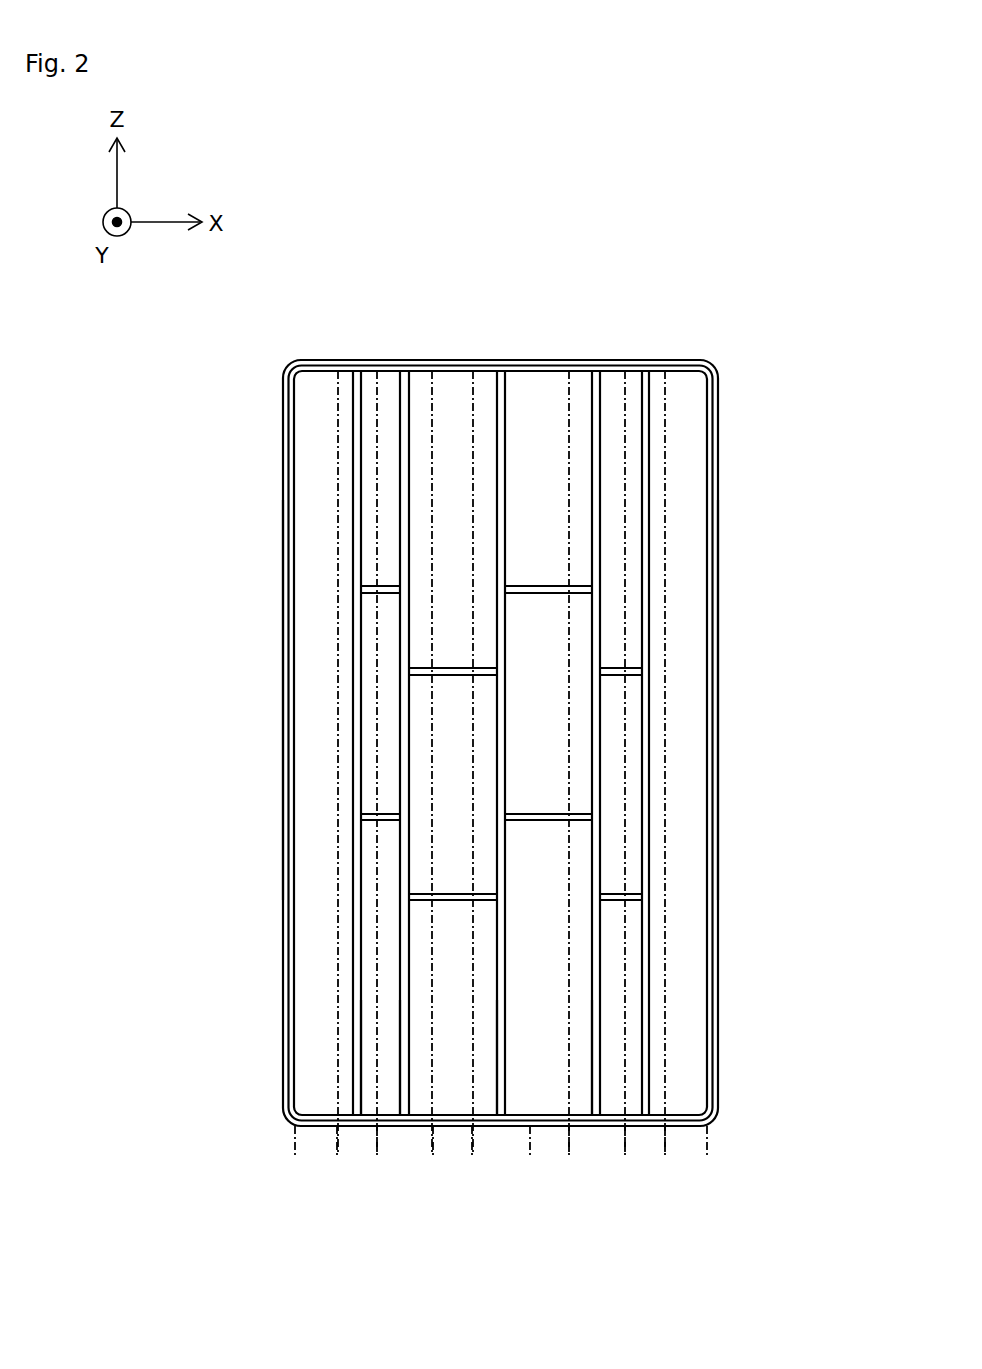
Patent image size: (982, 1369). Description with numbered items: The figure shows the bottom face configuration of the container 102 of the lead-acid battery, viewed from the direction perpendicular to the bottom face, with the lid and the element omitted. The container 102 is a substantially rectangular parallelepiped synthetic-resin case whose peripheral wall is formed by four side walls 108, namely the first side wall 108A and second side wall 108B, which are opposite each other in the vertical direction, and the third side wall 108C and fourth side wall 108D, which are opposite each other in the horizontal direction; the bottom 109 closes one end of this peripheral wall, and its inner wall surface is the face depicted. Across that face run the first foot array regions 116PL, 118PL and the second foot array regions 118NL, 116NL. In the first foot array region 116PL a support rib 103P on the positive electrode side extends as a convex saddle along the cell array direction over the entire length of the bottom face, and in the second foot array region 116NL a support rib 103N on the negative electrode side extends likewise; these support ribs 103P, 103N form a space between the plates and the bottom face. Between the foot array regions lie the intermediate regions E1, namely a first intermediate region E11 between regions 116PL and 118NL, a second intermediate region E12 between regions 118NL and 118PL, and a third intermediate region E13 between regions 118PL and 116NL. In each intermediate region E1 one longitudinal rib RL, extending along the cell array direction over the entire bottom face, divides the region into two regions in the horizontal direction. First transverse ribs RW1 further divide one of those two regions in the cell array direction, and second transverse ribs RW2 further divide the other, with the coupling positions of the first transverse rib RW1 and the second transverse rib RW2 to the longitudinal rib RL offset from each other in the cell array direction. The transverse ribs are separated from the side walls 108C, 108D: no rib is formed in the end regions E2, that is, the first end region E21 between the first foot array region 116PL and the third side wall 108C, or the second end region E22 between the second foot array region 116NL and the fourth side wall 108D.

The container 102 is at (783, 255).
The side walls 108 is at (498, 774).
The first side wall 108A is at (622, 358).
The second side wall 108B is at (545, 1128).
The third side wall 108C is at (283, 622).
The fourth side wall 108D is at (718, 523).
The bottom 109 is at (695, 729).
The support rib on the positive electrode side 103P is at (355, 451).
The support rib on the negative electrode side 103N is at (650, 462).
The first foot array region 116PL is at (348, 360).
The second foot array region 118NL is at (447, 360).
The first foot array region 118PL is at (553, 360).
The second foot array region 116NL is at (657, 360).
The first transverse rib RW1 is at (545, 584).
The second transverse rib RW2 is at (455, 666).
The longitudinal rib RL is at (592, 1040).
The intermediate region E1 is at (500, 1179).
The end region E2 is at (500, 1179).
The first intermediate region E11 is at (377, 1162).
The second intermediate region E12 is at (472, 1162).
The third intermediate region E13 is at (569, 1162).
The first end region E21 is at (295, 1162).
The second end region E22 is at (665, 1162).